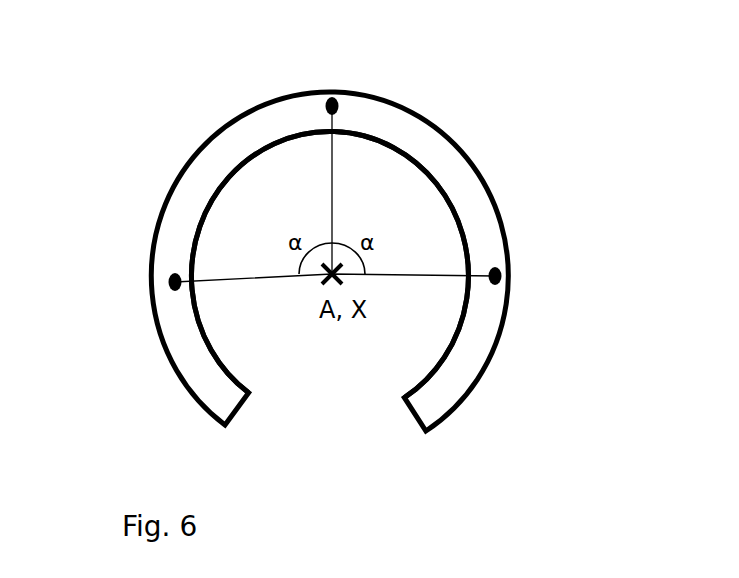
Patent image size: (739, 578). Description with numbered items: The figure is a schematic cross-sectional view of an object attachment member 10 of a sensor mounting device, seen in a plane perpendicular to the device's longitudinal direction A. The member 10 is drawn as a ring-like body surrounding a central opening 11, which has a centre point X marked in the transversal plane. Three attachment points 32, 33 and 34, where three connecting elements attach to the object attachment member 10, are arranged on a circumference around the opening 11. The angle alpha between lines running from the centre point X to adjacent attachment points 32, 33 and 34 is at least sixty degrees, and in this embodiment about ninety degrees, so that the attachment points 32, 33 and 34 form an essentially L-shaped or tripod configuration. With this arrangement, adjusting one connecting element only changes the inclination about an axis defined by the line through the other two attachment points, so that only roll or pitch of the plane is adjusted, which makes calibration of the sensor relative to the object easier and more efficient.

The object attachment member 10 is at (198, 175).
The opening 11 is at (416, 230).
The attachment point 32 is at (172, 281).
The attachment point 33 is at (328, 103).
The attachment point 34 is at (497, 275).